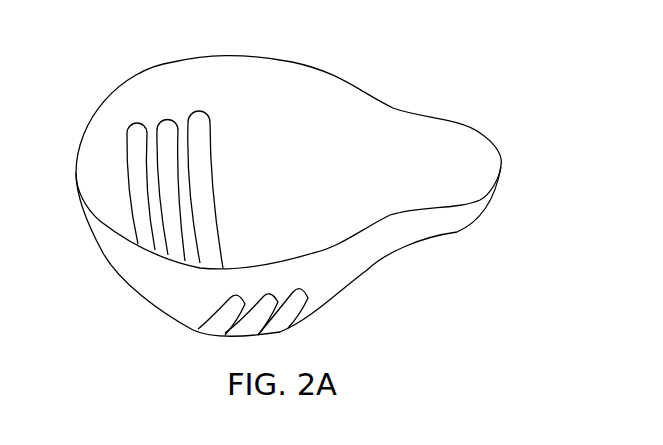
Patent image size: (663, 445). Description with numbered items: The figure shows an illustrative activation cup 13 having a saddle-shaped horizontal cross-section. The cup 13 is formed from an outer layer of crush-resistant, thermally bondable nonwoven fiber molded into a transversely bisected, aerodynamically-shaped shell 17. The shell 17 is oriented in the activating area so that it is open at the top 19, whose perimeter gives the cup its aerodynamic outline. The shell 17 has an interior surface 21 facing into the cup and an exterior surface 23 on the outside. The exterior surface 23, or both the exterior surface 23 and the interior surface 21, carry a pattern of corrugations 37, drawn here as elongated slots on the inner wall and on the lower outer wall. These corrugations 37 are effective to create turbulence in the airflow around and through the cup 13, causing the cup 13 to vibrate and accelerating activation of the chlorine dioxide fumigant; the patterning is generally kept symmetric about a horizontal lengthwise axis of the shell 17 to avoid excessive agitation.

The activation cup 13 is at (122, 68).
The top 19 is at (278, 92).
The interior surface 21 is at (372, 133).
The aerodynamically-shaped shell 17 is at (501, 163).
The exterior surface 23 is at (357, 265).
The corrugations 37 is at (203, 165).